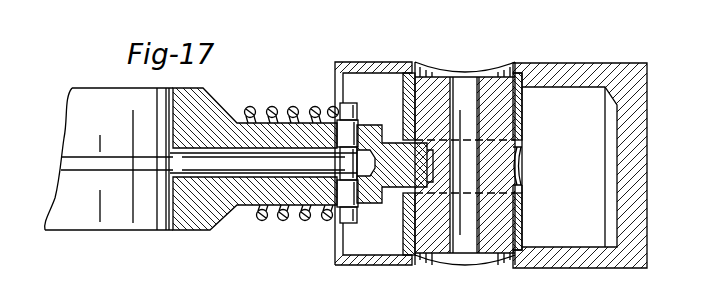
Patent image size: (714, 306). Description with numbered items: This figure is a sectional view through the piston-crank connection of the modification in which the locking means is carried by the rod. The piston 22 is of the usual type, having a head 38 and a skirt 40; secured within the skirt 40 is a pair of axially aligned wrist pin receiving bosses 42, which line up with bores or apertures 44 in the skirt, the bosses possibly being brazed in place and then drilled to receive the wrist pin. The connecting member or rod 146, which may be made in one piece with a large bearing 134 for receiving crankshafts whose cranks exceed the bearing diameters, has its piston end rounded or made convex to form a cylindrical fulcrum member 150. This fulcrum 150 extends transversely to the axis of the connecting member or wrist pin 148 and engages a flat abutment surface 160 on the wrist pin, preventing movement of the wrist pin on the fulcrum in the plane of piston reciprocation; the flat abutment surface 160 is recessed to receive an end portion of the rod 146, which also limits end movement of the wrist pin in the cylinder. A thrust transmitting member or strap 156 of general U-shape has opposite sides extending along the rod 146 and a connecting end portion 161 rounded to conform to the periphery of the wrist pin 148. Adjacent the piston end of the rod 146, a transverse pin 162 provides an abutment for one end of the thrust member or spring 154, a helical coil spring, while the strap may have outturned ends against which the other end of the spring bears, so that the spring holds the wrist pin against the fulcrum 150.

The piston 22 is at (397, 61).
The head 38 is at (639, 88).
The skirt 40 is at (388, 266).
The wrist pin receiving bosses 42 is at (405, 85).
The bores or apertures 44 is at (493, 72).
The large bearing 134 is at (169, 224).
The connecting member or rod 146 is at (244, 197).
The connecting member or wrist pin 148 is at (517, 117).
The fulcrum member 150 is at (399, 142).
The thrust member or spring 154 is at (271, 104).
The thrust transmitting member or strap 156 is at (520, 149).
The flat abutment surface 160 is at (425, 182).
The connecting end portion 161 is at (519, 181).
The transverse pin 162 is at (344, 223).